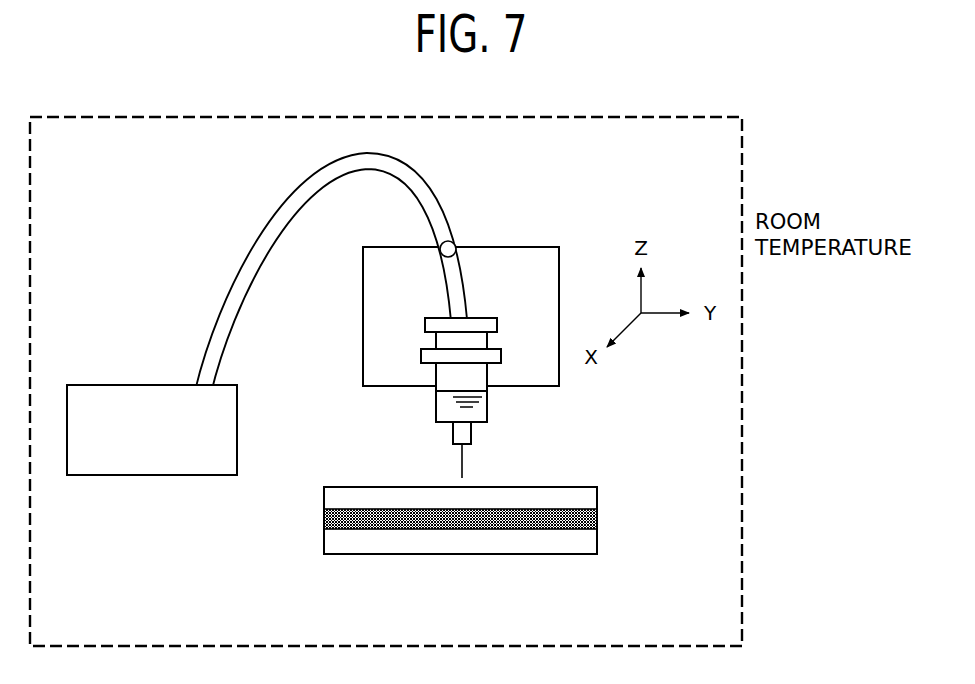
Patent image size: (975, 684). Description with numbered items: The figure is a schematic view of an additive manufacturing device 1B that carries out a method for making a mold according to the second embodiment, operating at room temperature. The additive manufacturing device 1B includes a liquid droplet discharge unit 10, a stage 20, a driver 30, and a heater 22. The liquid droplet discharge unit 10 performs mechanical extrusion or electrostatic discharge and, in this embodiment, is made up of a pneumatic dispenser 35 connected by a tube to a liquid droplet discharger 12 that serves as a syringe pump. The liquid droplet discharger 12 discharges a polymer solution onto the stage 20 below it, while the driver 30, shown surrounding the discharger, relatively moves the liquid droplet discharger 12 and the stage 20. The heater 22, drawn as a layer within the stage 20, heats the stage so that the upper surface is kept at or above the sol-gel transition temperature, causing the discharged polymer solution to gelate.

The additive manufacturing device 1B is at (598, 198).
The liquid droplet discharge unit 10 is at (225, 225).
The liquid droplet discharger 12 is at (462, 460).
The stage 20 is at (540, 554).
The heater 22 is at (597, 513).
The driver 30 is at (363, 289).
The pneumatic dispenser 35 is at (196, 475).